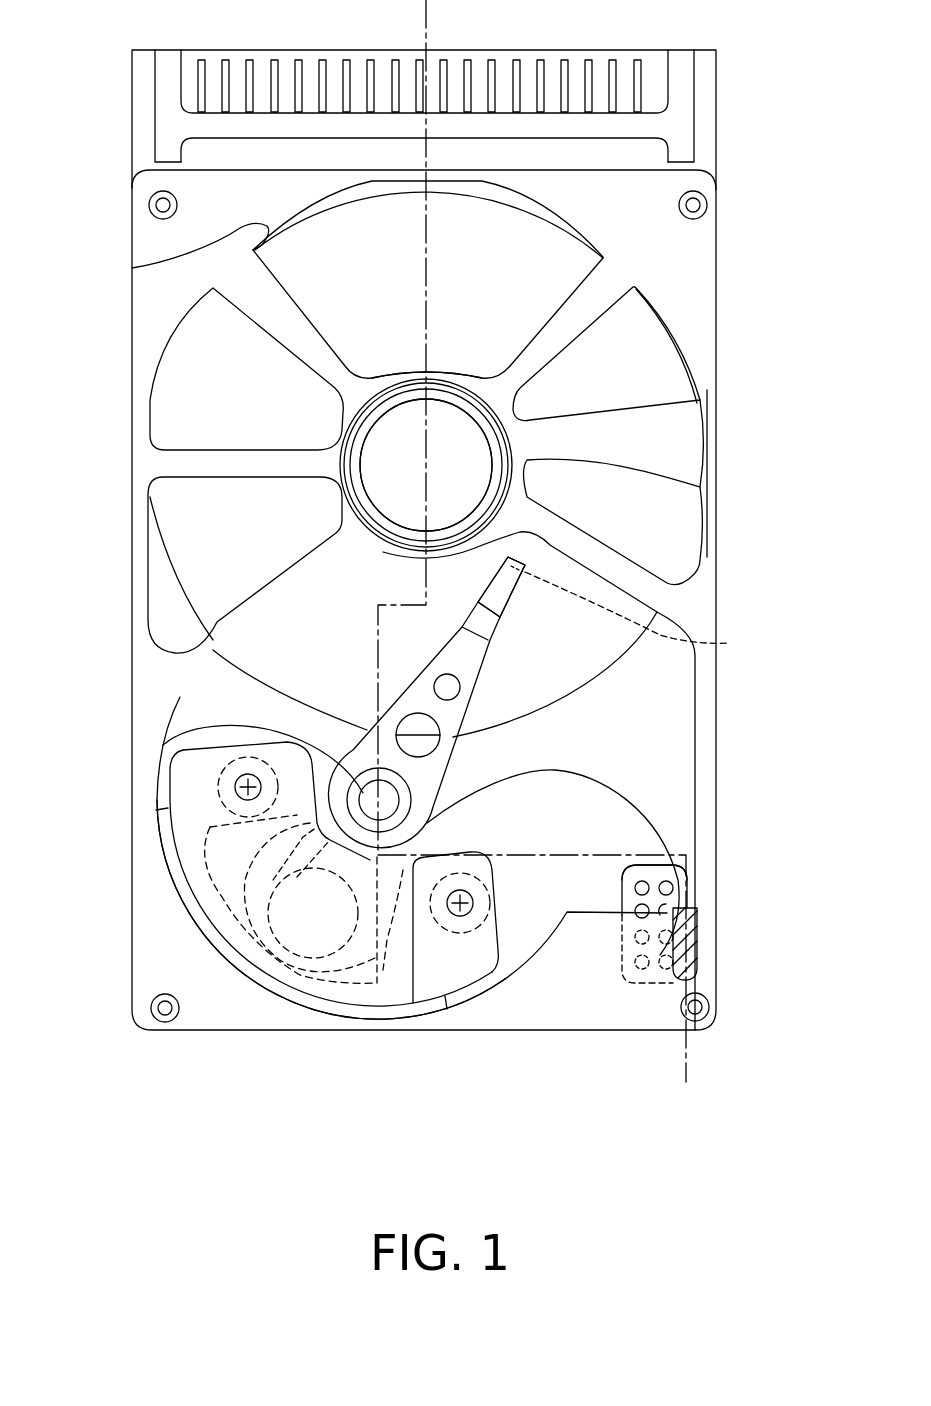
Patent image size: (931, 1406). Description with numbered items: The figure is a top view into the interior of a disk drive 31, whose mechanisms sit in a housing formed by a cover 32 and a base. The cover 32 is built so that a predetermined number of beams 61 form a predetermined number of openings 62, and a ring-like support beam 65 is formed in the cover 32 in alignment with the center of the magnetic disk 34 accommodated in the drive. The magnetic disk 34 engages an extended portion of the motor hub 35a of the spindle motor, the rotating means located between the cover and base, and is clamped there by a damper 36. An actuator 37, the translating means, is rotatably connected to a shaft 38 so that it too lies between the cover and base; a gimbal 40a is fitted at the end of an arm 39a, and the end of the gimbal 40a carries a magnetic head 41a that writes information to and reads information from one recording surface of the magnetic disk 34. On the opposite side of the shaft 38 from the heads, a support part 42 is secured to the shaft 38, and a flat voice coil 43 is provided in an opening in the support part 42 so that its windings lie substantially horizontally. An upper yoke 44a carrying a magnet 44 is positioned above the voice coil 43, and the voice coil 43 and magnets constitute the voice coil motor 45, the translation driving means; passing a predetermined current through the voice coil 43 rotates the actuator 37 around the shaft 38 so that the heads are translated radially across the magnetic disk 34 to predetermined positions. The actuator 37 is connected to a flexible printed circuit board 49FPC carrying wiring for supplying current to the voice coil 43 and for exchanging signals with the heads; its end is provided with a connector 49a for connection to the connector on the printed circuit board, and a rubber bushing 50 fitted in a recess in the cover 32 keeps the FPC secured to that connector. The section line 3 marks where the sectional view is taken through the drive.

The disk drive 31 is at (111, 30).
The cover 32 is at (697, 262).
The section line (FIG. 3) 3 is at (428, 15).
The magnetic disk 34 is at (677, 425).
The motor hub 35a is at (480, 467).
The damper 36 is at (485, 432).
The actuator 37 is at (385, 552).
The shaft 38 is at (182, 740).
The arm 39a is at (455, 710).
The gimbal 40a is at (497, 603).
The magnetic head 41a is at (730, 643).
The support part 42 is at (397, 963).
The voice coil 43 is at (293, 963).
The magnet 44 is at (413, 1003).
The upper yoke 44a is at (477, 977).
The voice coil motor (VCM) 45 is at (210, 933).
The flexible printed circuit board (FPC) 49FPC is at (652, 860).
The connector 49a is at (690, 853).
The rubber bushing 50 is at (697, 937).
The beams 61 is at (340, 367).
The openings 62 is at (150, 268).
The ring-like support beam 65 is at (448, 367).